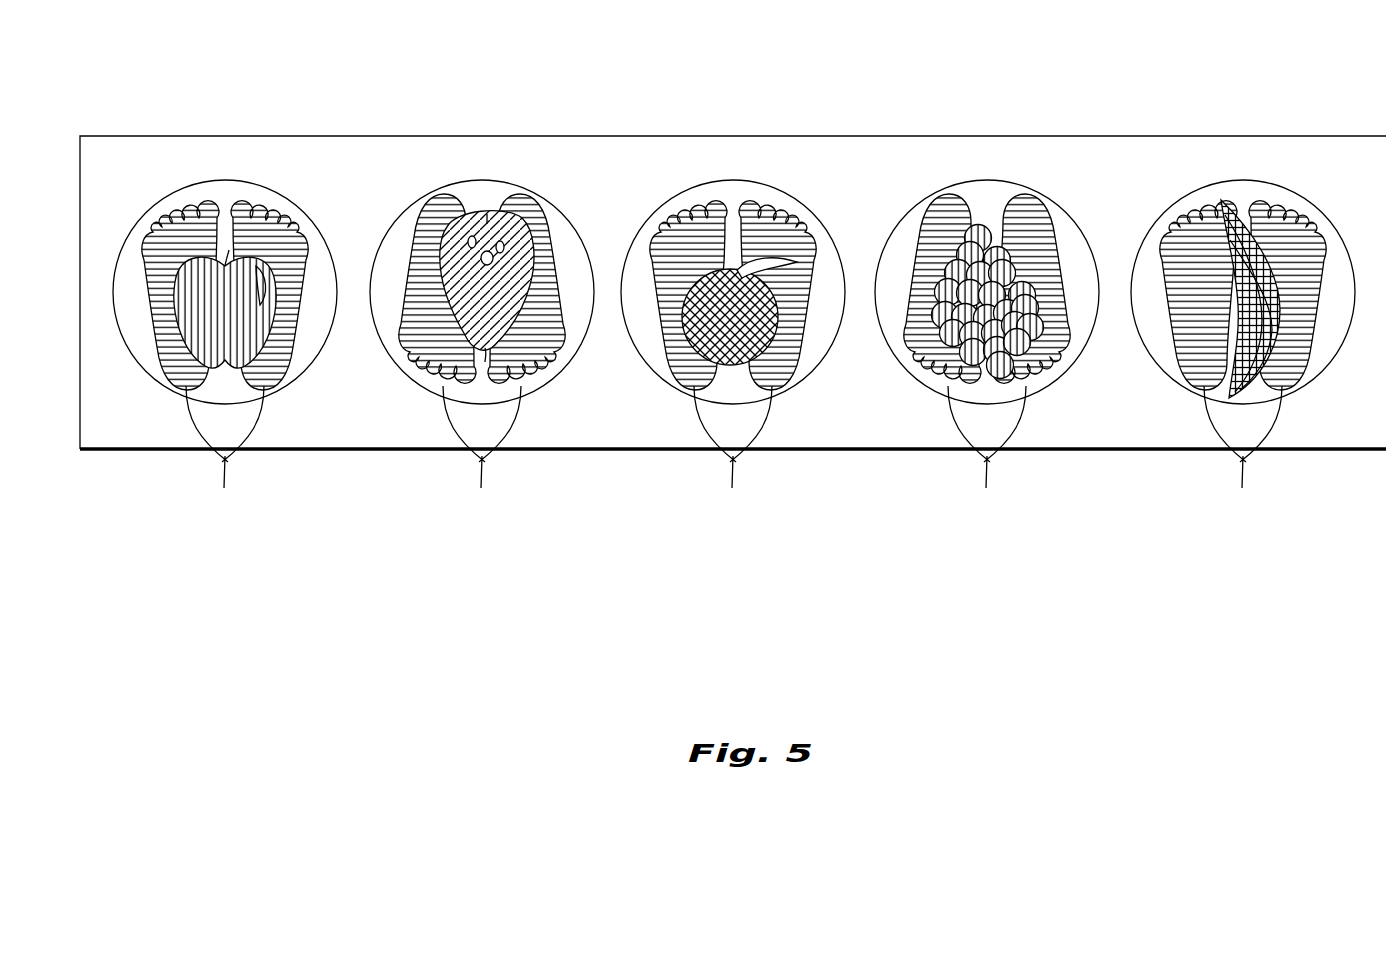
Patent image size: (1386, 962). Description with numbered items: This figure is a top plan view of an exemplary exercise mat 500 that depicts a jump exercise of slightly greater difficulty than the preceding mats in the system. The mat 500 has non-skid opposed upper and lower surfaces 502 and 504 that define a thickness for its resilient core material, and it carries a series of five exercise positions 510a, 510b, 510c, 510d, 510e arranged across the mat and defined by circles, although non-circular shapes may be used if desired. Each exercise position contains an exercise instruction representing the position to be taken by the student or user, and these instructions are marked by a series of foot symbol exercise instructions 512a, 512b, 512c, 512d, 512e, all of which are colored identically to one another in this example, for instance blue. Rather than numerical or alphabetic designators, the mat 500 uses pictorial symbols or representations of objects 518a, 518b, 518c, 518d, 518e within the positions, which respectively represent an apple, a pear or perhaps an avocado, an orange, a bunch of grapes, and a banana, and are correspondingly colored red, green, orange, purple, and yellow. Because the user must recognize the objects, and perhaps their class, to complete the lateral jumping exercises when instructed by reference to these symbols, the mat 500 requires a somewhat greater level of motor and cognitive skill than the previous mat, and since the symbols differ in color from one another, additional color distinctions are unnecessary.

The exercise mat 500 is at (440, 583).
The upper surface 502 is at (875, 424).
The lower surface 504 is at (1121, 420).
The exercise position 510a is at (167, 195).
The exercise position 510b is at (424, 197).
The exercise position 510c is at (670, 197).
The exercise position 510d is at (925, 197).
The exercise position 510e is at (1181, 197).
The foot symbol exercise instruction 512a is at (225, 453).
The foot symbol exercise instruction 512b is at (482, 453).
The foot symbol exercise instruction 512c is at (733, 453).
The foot symbol exercise instruction 512d is at (987, 453).
The foot symbol exercise instruction 512e is at (1243, 453).
The pictorial symbol 518a is at (227, 262).
The pictorial symbol 518b is at (487, 214).
The pictorial symbol 518c is at (727, 270).
The pictorial symbol 518d is at (978, 226).
The pictorial symbol 518e is at (1222, 202).